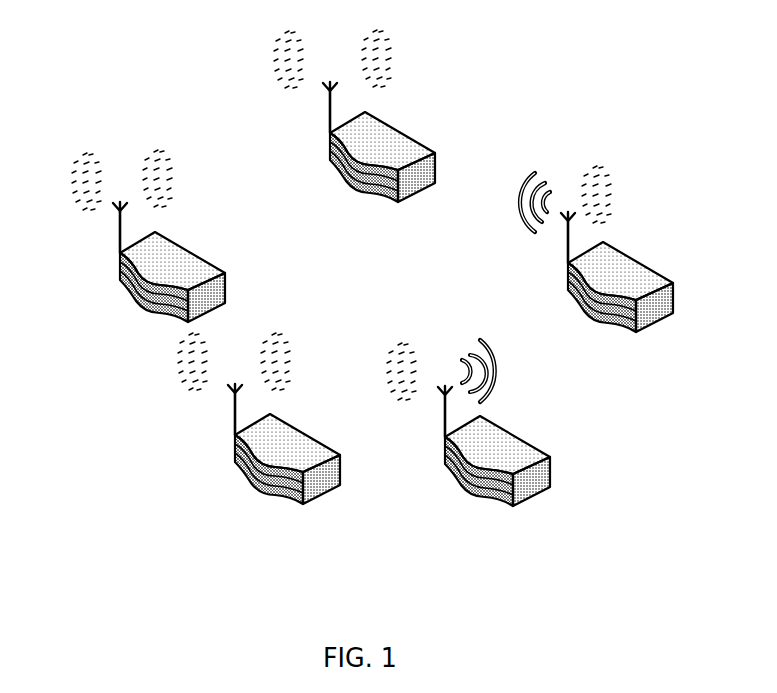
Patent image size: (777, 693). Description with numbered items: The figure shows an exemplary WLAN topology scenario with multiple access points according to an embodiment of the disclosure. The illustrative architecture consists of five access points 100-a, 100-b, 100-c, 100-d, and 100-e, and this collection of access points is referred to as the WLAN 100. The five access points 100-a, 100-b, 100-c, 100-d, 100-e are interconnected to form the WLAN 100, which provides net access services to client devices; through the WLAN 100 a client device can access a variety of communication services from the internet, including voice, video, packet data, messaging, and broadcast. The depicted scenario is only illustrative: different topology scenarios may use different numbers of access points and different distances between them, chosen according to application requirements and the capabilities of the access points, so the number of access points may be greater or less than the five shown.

The WLAN 100 is at (188, 103).
The access point 100-a is at (447, 162).
The access point 100-b is at (598, 350).
The access point 100-c is at (525, 513).
The access point 100-d is at (267, 503).
The access point 100-e is at (145, 348).